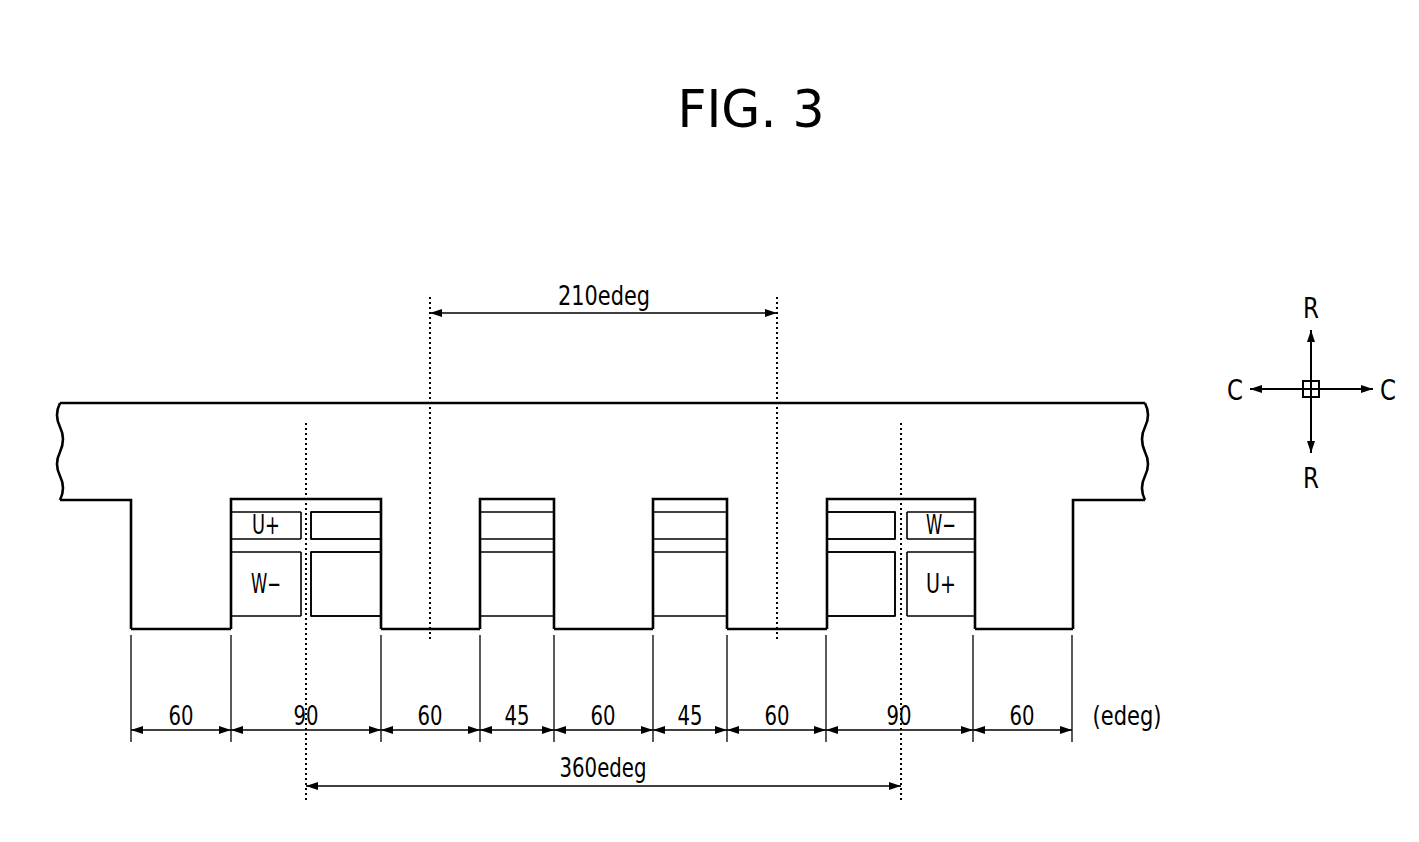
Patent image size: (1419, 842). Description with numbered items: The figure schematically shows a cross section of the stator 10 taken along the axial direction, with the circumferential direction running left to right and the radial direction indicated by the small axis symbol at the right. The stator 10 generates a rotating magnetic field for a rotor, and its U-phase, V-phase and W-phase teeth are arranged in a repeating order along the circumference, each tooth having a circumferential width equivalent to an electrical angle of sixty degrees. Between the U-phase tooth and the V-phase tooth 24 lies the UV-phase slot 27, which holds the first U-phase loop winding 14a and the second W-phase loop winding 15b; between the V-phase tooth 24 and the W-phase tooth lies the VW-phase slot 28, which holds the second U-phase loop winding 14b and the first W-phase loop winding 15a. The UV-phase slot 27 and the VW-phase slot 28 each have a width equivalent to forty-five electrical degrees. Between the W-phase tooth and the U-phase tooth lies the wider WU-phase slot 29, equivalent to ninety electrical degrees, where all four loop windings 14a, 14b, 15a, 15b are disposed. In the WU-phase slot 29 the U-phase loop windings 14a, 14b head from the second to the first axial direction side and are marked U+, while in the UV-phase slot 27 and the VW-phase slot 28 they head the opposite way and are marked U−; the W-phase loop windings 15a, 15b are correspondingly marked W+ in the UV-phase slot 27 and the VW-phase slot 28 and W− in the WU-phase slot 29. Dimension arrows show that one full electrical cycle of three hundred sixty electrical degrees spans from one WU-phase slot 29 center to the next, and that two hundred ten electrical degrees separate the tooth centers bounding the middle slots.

The stator 10 is at (1056, 326).
The first U-phase loop winding 14a is at (372, 568).
The second U-phase loop winding 14b is at (841, 518).
The first W-phase loop winding 15a is at (837, 570).
The second W-phase loop winding 15b is at (358, 515).
The V-phase tooth 24 is at (578, 624).
The UV-phase slot 27 is at (505, 490).
The VW-phase slot 28 is at (687, 490).
The WU-phase slot 29 is at (910, 497).